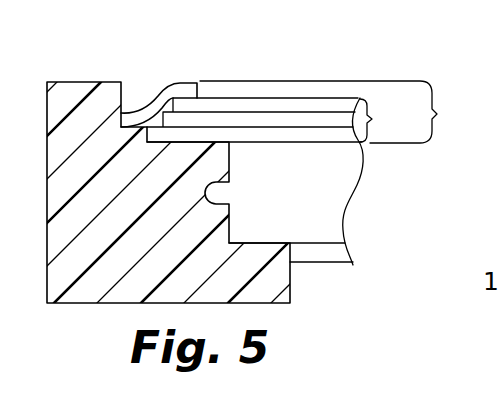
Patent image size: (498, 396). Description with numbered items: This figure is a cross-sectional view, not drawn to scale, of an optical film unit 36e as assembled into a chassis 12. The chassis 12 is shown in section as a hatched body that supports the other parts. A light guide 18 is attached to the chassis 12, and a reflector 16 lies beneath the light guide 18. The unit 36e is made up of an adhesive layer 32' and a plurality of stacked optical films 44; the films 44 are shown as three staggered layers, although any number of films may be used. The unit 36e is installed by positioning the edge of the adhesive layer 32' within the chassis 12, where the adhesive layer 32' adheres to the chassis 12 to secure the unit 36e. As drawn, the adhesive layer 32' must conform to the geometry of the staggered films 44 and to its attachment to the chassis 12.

The chassis 12 is at (77, 92).
The adhesive layer 32' is at (159, 83).
The plurality of stacked optical films 44 is at (278, 120).
The optical film unit 36e is at (343, 112).
The light guide 18 is at (335, 215).
The reflector 16 is at (332, 257).